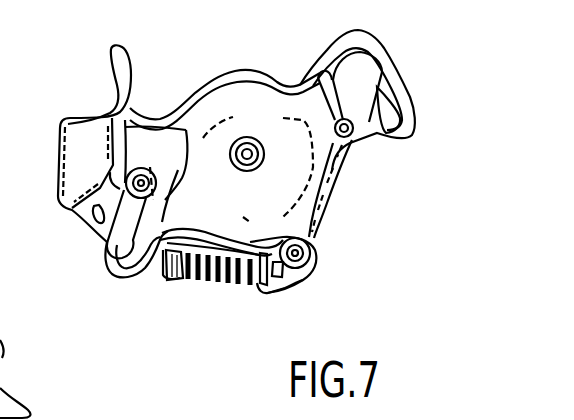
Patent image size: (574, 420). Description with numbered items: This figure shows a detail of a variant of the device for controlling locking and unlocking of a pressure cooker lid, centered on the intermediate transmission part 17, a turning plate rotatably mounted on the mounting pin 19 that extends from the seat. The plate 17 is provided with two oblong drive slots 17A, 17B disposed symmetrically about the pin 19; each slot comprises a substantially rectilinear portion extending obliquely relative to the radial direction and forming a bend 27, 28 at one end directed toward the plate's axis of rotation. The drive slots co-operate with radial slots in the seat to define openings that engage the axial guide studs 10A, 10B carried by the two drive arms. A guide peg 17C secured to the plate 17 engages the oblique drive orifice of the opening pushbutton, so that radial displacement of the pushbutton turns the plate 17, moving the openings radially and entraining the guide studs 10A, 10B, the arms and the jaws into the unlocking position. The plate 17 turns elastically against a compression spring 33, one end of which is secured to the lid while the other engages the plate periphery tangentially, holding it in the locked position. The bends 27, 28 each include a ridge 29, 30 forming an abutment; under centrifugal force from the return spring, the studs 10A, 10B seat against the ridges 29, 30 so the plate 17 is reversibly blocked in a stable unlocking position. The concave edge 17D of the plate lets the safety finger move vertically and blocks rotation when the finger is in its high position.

The intermediate transmission part 17 is at (338, 199).
The oblong drive slot 17A is at (188, 110).
The oblong drive slot 17B is at (390, 155).
The guide peg 17C is at (317, 253).
The edge of the intermediate transmission part 17D is at (83, 113).
The axial guide stud 10A is at (153, 140).
The axial guide stud 10B is at (317, 83).
The mounting pin 19 is at (247, 138).
The bend 27 is at (100, 230).
The bend 28 is at (396, 70).
The ridge 29 is at (112, 265).
The ridge 30 is at (363, 66).
The compression spring 33 is at (207, 285).